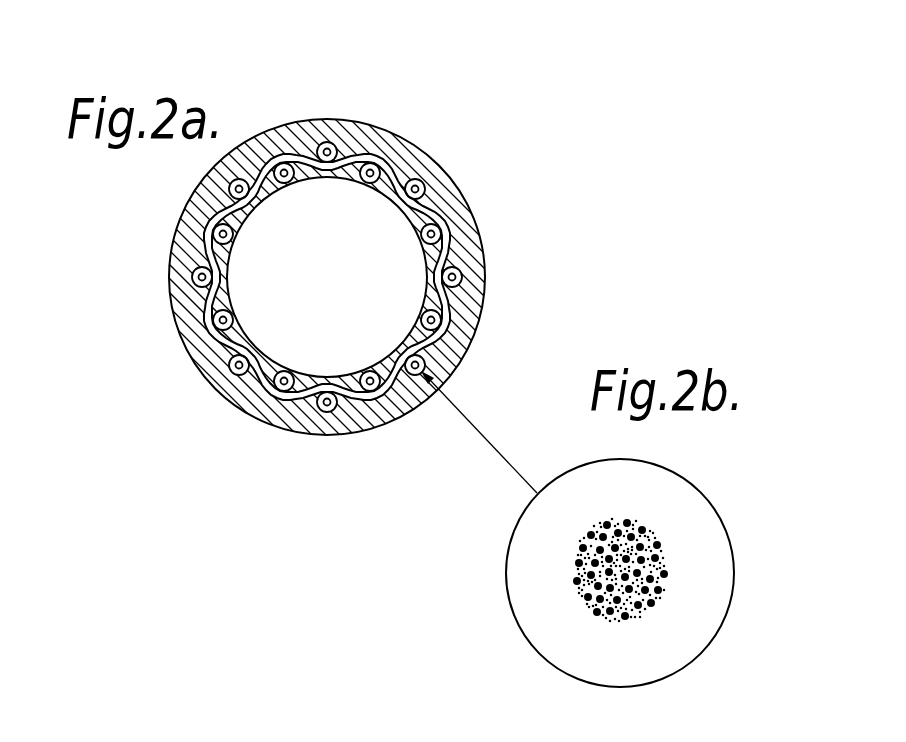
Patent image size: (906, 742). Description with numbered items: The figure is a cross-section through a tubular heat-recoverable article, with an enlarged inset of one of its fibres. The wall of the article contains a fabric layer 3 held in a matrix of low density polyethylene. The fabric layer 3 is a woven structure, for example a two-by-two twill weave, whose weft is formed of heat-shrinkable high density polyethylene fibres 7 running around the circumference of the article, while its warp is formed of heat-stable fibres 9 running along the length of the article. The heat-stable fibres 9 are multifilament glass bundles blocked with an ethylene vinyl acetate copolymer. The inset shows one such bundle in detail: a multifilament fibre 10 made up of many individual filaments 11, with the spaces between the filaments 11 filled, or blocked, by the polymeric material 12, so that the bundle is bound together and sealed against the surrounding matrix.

In FIG. 2A, the fabric layer 3 is at (307, 478).
In FIG. 2A, the heat-shrinkable high density polyethylene fibres 7 is at (262, 403).
In FIG. 2A, the heat-stable fibres 9 is at (302, 403).
In FIG. 2B, the multifilament fibre 10 is at (497, 601).
In FIG. 2B, the filaments 11 is at (663, 577).
In FIG. 2B, the polymeric material 12 is at (590, 597).